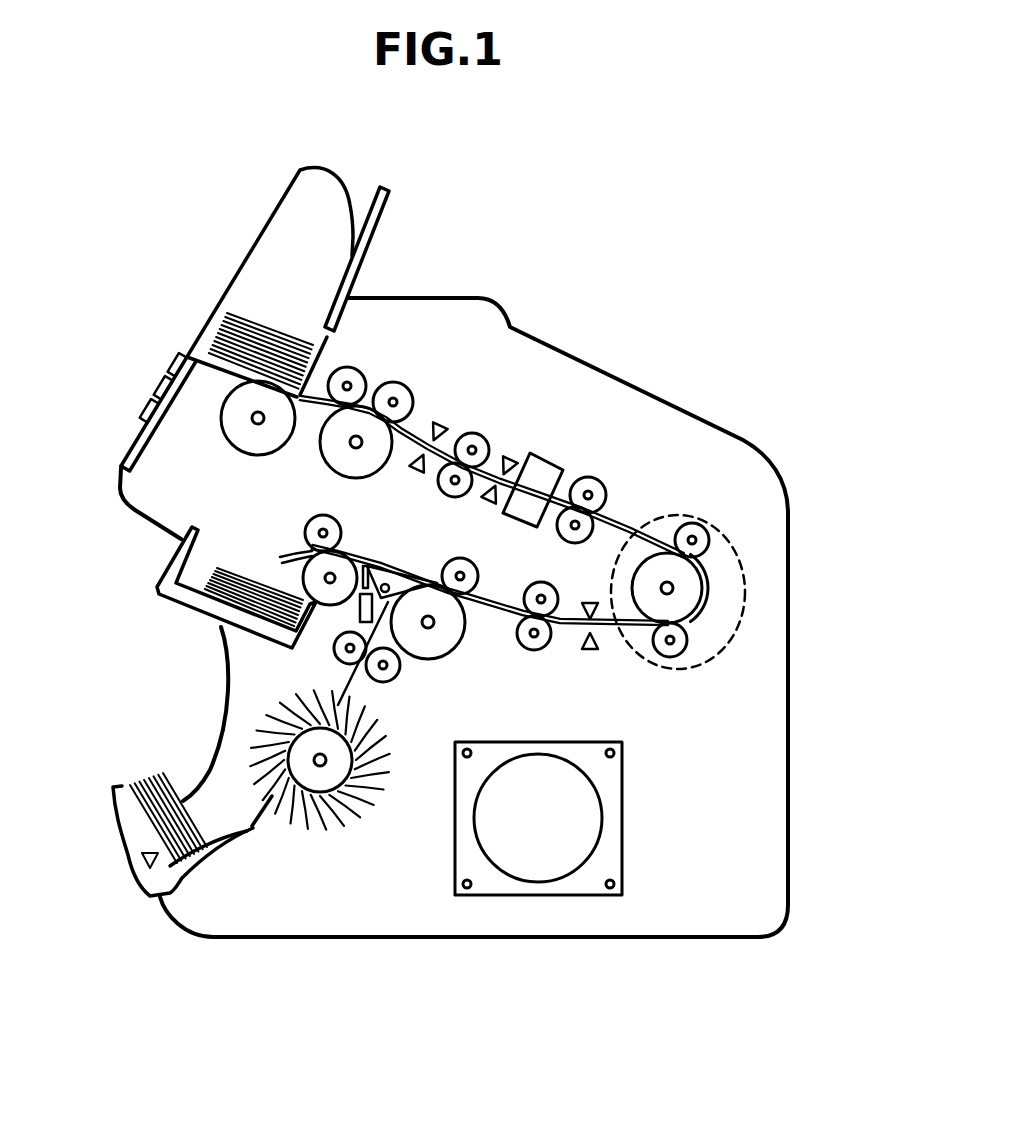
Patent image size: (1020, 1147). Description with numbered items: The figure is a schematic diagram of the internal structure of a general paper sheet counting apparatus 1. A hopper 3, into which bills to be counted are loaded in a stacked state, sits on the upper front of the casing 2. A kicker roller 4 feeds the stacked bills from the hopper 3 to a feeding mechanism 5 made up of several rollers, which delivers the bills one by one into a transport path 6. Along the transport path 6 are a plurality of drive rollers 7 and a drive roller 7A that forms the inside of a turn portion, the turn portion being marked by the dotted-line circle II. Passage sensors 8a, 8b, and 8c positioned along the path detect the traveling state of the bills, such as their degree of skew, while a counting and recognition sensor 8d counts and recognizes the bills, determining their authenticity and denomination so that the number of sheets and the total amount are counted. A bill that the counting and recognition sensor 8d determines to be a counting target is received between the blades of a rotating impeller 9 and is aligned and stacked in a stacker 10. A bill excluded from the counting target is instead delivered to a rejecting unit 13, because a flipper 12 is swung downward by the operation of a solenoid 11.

The paper sheet counting apparatus 1 is at (603, 255).
The casing 2 is at (487, 297).
The hopper 3 is at (234, 274).
The kicker roller 4 is at (224, 432).
The feeding mechanism 5 is at (378, 382).
The transport path 6 is at (627, 520).
The drive rollers 7 is at (560, 528).
The drive roller 7A is at (702, 588).
The passage sensor 8a is at (437, 427).
The passage sensor 8b is at (507, 460).
The passage sensor 8c is at (593, 645).
The counting and recognition sensor 8d is at (550, 457).
The impeller 9 is at (327, 818).
The stacker 10 is at (120, 780).
The solenoid 11 is at (341, 626).
The flipper 12 is at (377, 579).
The rejecting unit 13 is at (157, 596).
The dotted-line circled part II is at (742, 560).